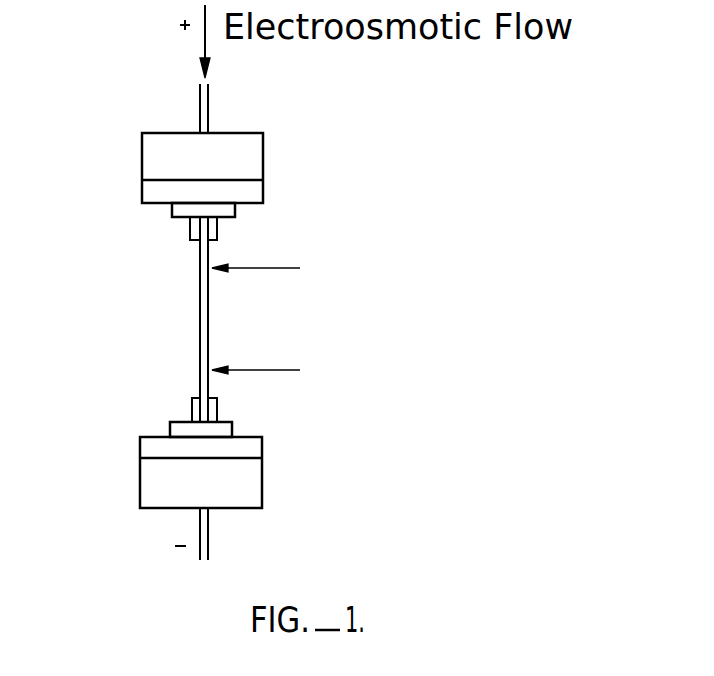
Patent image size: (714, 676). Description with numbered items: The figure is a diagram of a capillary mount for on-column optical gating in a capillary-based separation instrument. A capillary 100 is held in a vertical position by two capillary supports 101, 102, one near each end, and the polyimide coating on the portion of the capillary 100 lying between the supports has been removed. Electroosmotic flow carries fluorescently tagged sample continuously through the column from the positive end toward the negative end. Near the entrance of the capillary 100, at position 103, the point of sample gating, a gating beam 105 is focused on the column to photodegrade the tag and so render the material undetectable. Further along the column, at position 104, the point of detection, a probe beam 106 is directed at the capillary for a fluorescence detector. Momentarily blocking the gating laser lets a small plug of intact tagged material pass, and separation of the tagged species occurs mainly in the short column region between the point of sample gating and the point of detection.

The capillary 100 is at (208, 102).
The capillary support 101 is at (318, 138).
The capillary support 102 is at (316, 403).
The point of sample gating 103 is at (186, 268).
The point of detection 104 is at (186, 370).
The gating beam 105 is at (402, 272).
The probe beam 106 is at (400, 374).